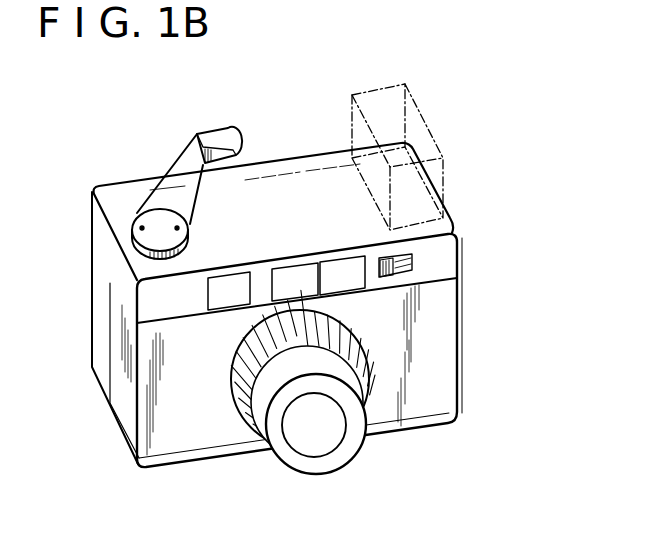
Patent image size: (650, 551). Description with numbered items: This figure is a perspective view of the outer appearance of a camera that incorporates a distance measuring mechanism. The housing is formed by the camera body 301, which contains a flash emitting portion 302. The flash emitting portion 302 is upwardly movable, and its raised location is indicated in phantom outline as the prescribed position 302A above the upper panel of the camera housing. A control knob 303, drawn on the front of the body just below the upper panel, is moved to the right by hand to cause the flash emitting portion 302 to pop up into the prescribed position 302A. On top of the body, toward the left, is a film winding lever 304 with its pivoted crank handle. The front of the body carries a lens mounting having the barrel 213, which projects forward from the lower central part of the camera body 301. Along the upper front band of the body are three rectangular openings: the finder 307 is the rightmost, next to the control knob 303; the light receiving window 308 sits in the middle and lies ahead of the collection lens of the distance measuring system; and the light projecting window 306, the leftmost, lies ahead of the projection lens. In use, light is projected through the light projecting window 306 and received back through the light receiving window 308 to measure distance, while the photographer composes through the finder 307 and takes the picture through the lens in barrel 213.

The camera body 301 is at (437, 333).
The flash emitting portion 302 is at (420, 203).
The prescribed position 302A is at (440, 142).
The control knob 303 is at (412, 262).
The film winding lever 304 is at (205, 130).
The light projecting window 306 is at (228, 288).
The finder 307 is at (337, 267).
The light receiving window 308 is at (295, 277).
The barrel 213 is at (353, 440).